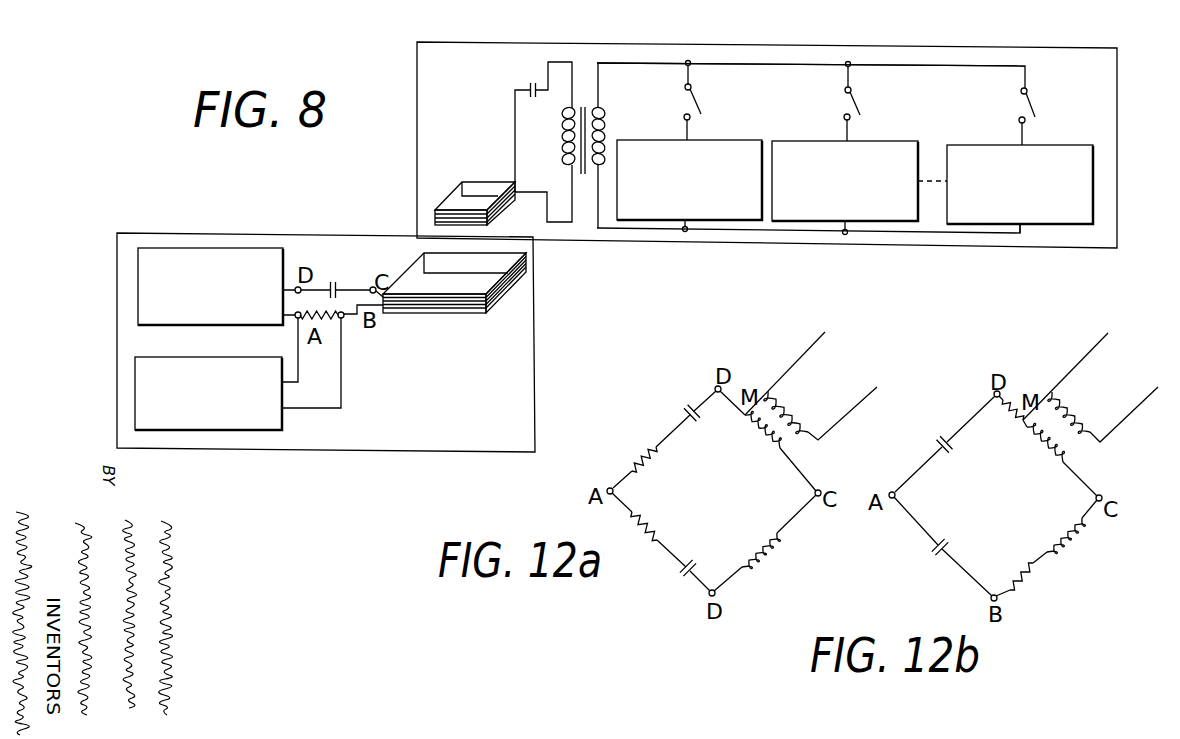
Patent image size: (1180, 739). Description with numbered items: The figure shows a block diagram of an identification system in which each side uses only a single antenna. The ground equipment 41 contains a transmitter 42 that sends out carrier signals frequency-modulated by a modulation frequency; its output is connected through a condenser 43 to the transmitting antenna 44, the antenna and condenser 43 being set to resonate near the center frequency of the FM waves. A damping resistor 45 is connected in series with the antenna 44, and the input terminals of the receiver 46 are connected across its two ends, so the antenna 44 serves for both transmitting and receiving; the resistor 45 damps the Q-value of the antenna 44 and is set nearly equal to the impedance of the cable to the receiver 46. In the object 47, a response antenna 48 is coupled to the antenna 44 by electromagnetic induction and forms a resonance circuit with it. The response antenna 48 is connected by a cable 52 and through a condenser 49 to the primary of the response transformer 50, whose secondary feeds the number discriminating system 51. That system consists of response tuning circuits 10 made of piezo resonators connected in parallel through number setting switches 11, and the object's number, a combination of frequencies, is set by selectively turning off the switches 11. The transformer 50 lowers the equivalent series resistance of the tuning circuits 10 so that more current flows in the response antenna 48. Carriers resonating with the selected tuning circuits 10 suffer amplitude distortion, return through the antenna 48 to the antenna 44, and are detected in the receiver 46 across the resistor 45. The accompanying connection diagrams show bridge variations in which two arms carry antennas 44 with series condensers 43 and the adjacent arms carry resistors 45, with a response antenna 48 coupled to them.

In FIG. 8, the response tuning circuits 10 is at (1040, 225).
In FIG. 8, the number setting switches 11 is at (713, 99).
In FIG. 8, the ground equipment 41 is at (289, 240).
In FIG. 8, the transmitter 42 is at (138, 283).
In FIG. 8, the condenser 43 is at (335, 283).
In FIG. 12a, the condenser 43 is at (683, 590).
In FIG. 12b, the condenser 43 is at (949, 538).
In FIG. 8, the transmitting antenna 44 is at (428, 314).
In FIG. 12a, the transmitting antenna 44 is at (771, 560).
In FIG. 12b, the transmitting antenna 44 is at (1077, 548).
In FIG. 8, the damping resistor 45 is at (339, 318).
In FIG. 12a, the damping resistor 45 is at (660, 454).
In FIG. 12b, the damping resistor 45 is at (1035, 588).
In FIG. 8, the receiver 46 is at (135, 402).
In FIG. 8, the object 47 is at (920, 243).
In FIG. 8, the response antenna 48 is at (495, 212).
In FIG. 12a, the response antenna 48 is at (792, 414).
In FIG. 12b, the response antenna 48 is at (1078, 416).
In FIG. 8, the condenser 49 is at (530, 85).
In FIG. 8, the response transformer 50 is at (581, 200).
In FIG. 8, the number discriminating system 51 is at (722, 62).
In FIG. 8, the cable 52 is at (537, 102).